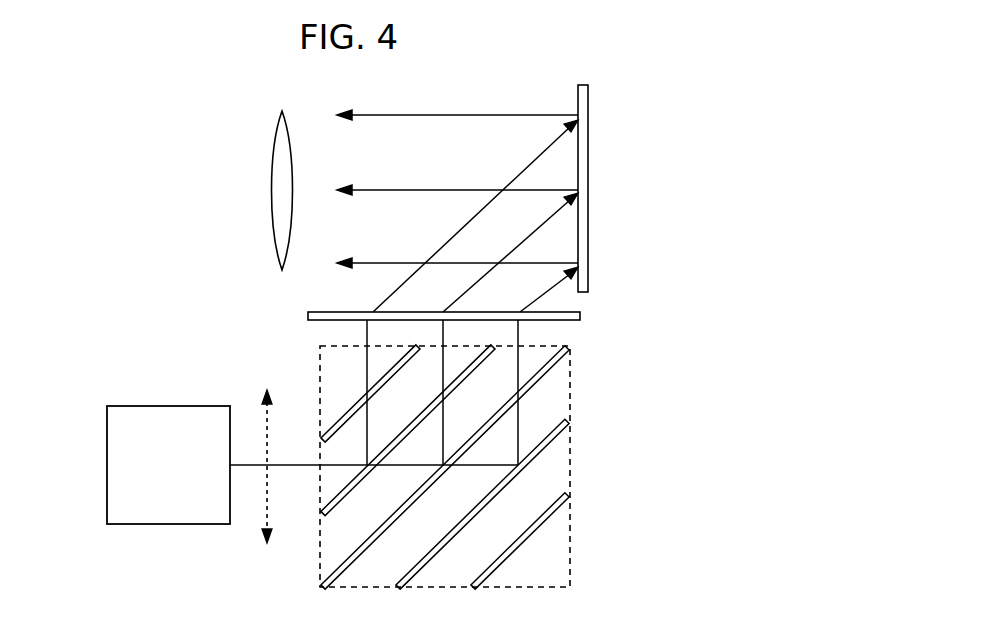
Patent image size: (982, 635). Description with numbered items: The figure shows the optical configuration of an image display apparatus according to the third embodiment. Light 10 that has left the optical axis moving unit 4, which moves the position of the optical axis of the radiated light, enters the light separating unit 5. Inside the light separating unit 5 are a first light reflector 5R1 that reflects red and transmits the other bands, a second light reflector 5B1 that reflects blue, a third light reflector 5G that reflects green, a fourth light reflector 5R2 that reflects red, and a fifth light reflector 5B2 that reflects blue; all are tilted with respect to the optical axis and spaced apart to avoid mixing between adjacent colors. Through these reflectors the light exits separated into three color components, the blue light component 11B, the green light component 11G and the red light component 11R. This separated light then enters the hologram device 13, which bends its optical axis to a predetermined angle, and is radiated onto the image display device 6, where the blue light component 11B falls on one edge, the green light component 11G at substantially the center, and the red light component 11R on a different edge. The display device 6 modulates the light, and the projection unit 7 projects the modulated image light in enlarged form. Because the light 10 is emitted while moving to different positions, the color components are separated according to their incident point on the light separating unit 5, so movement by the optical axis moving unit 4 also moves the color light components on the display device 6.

The optical axis moving unit 4 is at (107, 472).
The light separating unit 5 is at (444, 468).
The first light reflector 5R1 is at (352, 404).
The second light reflector 5B1 is at (332, 508).
The third light reflector 5G is at (540, 380).
The fourth light reflector 5R2 is at (543, 447).
The fifth light reflector 5B2 is at (553, 517).
The display device 6 is at (590, 135).
The projection unit 7 is at (278, 176).
The light 10 is at (258, 468).
The blue light component 11B is at (528, 160).
The green light component 11G is at (547, 222).
The red light component 11R is at (545, 297).
The hologram device 13 is at (308, 316).